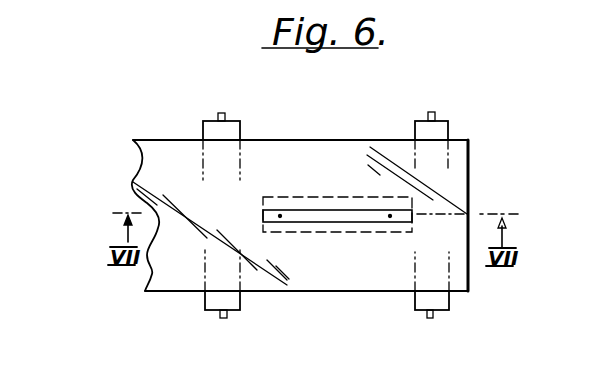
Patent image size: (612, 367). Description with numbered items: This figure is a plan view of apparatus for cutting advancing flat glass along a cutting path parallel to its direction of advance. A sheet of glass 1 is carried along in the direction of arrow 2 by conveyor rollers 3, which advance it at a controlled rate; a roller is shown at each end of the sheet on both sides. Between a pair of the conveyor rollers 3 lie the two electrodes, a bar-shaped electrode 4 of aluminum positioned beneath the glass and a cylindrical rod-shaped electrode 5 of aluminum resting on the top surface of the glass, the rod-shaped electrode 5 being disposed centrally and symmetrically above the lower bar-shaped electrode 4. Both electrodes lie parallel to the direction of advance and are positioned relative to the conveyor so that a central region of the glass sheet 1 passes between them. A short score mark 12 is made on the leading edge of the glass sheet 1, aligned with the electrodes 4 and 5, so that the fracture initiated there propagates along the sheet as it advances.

The glass sheet 1 is at (195, 280).
The arrow 2 is at (98, 213).
The conveyor rollers 3 is at (237, 305).
The bar-shaped electrode 4 is at (330, 197).
The rod-shaped electrode 5 is at (295, 213).
The score mark 12 is at (468, 215).